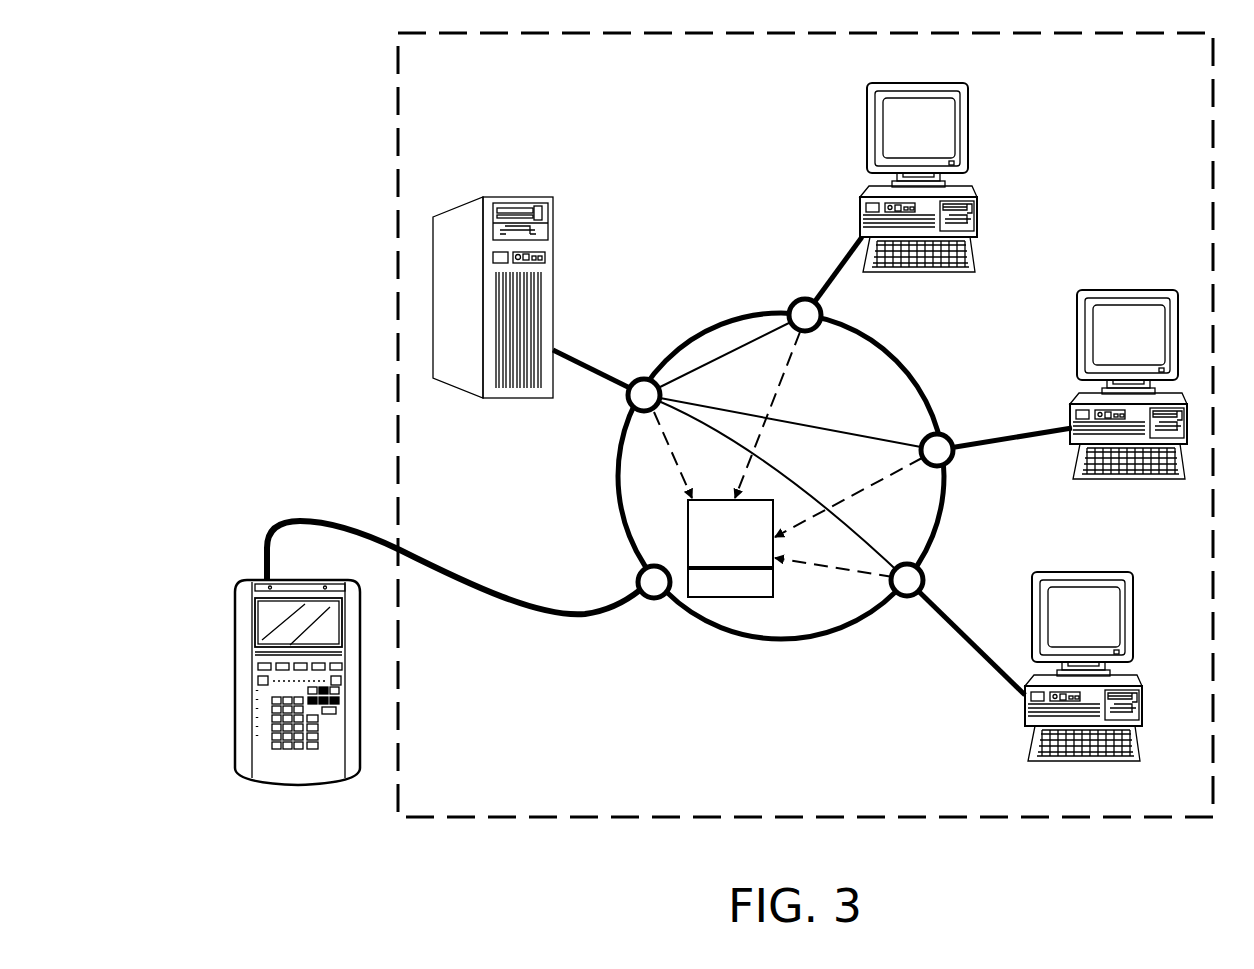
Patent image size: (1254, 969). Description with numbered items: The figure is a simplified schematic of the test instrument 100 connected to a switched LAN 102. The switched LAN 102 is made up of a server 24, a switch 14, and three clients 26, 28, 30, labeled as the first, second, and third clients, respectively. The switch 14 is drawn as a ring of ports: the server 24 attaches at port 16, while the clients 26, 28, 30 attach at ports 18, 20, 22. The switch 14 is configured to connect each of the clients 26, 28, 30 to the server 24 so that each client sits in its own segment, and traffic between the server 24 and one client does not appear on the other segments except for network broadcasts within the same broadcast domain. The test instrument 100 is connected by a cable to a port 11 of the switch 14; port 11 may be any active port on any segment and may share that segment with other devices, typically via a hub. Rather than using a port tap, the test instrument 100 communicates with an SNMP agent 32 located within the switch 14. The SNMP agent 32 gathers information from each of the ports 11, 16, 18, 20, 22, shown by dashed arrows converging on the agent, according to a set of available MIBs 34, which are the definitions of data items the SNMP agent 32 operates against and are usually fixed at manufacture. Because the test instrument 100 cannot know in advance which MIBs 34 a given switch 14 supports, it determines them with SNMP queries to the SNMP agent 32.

The switched LAN 102 is at (680, 76).
The server 24 is at (452, 207).
The client 26 is at (932, 78).
The client 28 is at (1103, 288).
The client 30 is at (1058, 572).
The switch 14 is at (968, 557).
The port 16 is at (645, 370).
The port 18 is at (796, 298).
The port 20 is at (942, 430).
The port 22 is at (907, 600).
The port 11 is at (650, 600).
The SNMP agent 32 is at (757, 498).
The MIBs 34 is at (745, 598).
The test instrument 100 is at (243, 578).